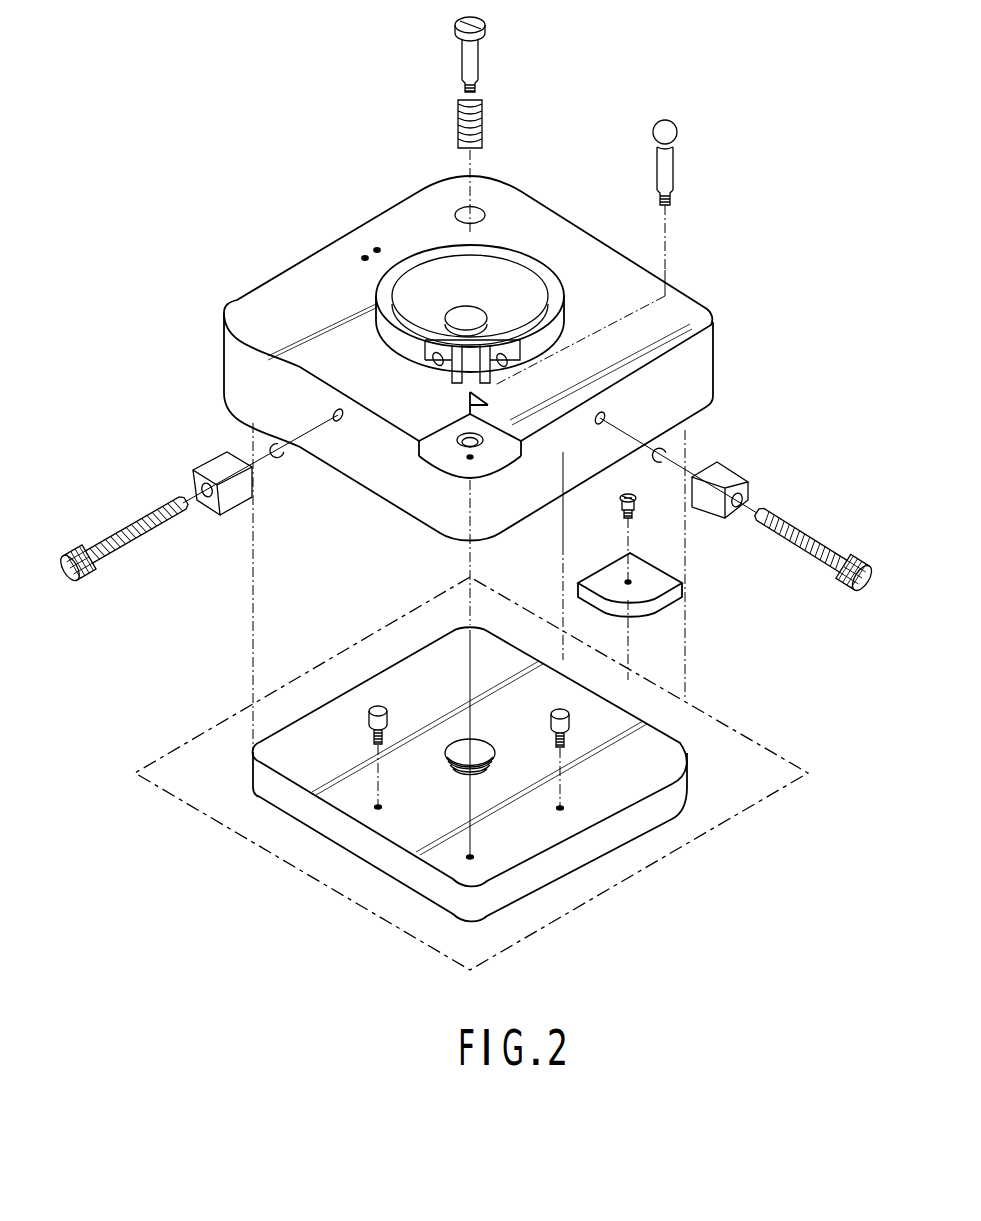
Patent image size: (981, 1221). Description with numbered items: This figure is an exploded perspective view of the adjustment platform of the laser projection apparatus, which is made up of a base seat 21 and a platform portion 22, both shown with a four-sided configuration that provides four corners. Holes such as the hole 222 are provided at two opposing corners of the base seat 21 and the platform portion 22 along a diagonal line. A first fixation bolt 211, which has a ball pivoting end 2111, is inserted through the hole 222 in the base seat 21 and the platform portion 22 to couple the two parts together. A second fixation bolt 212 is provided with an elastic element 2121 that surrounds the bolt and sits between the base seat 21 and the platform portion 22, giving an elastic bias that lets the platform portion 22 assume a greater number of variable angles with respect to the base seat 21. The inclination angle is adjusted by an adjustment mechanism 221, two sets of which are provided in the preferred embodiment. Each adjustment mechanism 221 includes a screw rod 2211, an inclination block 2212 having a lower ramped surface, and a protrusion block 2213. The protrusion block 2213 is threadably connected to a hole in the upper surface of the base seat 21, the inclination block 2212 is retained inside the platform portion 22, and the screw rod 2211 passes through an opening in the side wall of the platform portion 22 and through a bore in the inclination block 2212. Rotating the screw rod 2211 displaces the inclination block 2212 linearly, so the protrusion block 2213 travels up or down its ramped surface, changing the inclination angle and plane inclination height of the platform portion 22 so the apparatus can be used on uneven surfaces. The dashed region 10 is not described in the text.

The mounting region 10 is at (742, 747).
The base seat 21 is at (620, 785).
The platform portion 22 is at (710, 313).
The first fixation bolt 211 is at (673, 172).
The ball pivoting end 2111 is at (676, 135).
The second fixation bolt 212 is at (478, 50).
The elastic element 2121 is at (482, 128).
The adjustment mechanism 221 is at (240, 652).
The screw rod 2211 is at (110, 572).
The inclination block 2212 is at (203, 502).
The protrusion block 2213 is at (378, 708).
The hole 222 is at (455, 447).